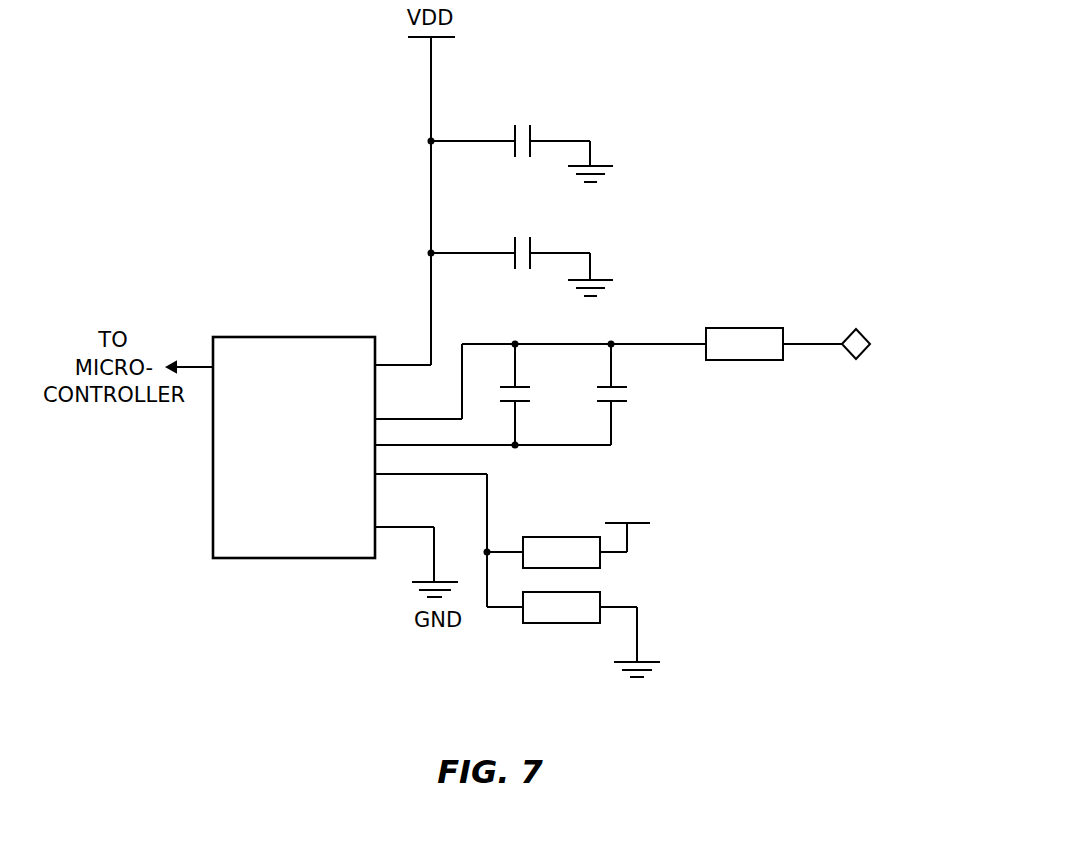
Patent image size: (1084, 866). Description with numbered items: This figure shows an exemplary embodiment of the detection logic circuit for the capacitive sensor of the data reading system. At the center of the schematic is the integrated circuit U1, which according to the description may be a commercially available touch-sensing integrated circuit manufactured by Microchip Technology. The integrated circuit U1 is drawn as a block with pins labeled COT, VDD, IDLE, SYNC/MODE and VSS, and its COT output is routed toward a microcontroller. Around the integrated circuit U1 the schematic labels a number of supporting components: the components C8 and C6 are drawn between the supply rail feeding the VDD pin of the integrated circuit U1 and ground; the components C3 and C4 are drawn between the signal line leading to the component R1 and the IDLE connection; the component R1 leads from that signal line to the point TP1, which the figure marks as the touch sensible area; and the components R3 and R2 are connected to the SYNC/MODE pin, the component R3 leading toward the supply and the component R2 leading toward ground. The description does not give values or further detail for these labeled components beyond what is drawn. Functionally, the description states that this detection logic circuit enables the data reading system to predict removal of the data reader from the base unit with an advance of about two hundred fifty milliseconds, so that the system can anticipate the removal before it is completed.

The integrated circuit U1 is at (294, 447).
The VDD decoupling capacitor C8 is at (524, 157).
The VDD decoupling capacitor C6 is at (524, 272).
The sensing capacitor C3 is at (534, 394).
The sensing capacitor C4 is at (631, 394).
The touch pad series resistor R1 is at (774, 344).
The touch sensible area test point TP1 is at (869, 316).
The pull-up resistor to VDD R3 is at (568, 531).
The pull-down resistor to GND R2 is at (575, 652).